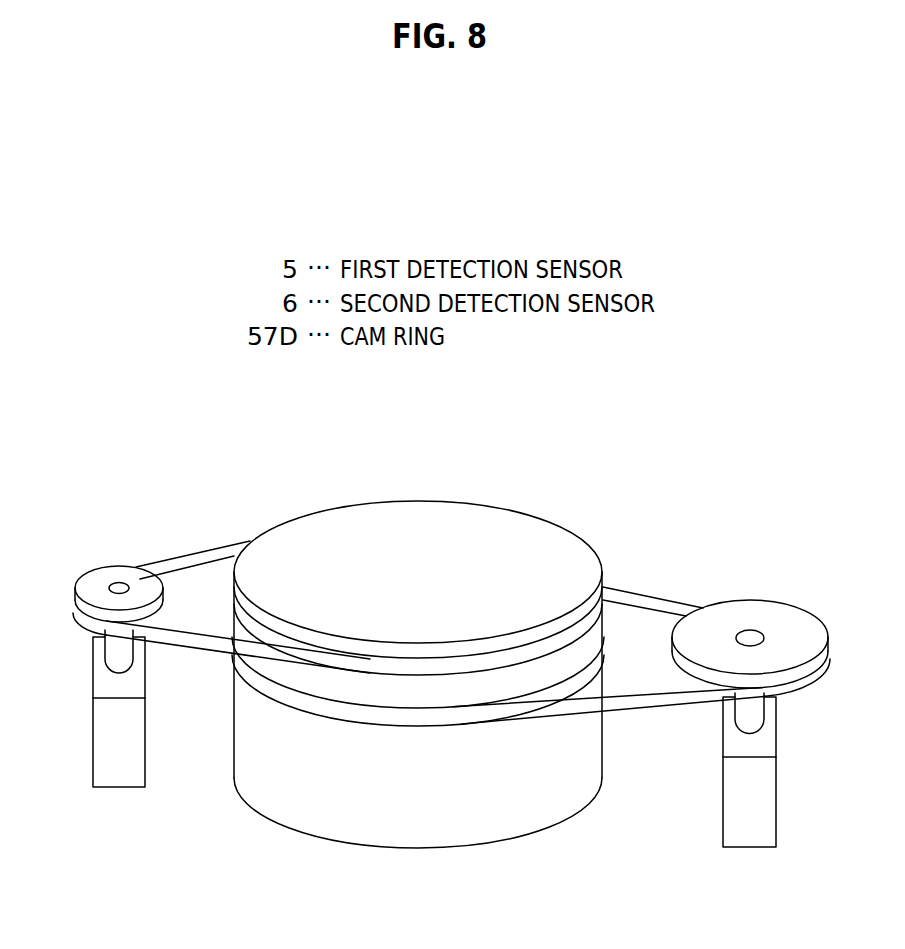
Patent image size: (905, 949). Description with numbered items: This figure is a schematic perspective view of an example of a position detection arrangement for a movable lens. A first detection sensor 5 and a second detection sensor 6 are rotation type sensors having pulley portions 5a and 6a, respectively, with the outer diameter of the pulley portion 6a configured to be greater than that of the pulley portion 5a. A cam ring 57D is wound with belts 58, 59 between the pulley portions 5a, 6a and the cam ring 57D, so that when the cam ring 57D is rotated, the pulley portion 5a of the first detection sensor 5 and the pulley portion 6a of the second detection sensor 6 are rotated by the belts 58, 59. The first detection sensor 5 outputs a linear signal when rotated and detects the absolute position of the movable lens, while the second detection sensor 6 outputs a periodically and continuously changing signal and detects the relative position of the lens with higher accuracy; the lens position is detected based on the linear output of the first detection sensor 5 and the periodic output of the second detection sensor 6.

The first detection sensor 5 is at (113, 653).
The pulley portion 5a is at (98, 577).
The second detection sensor 6 is at (752, 723).
The pulley portion 6a is at (773, 620).
The cam ring 57D is at (405, 832).
The belt 58 is at (195, 633).
The belt 59 is at (658, 690).